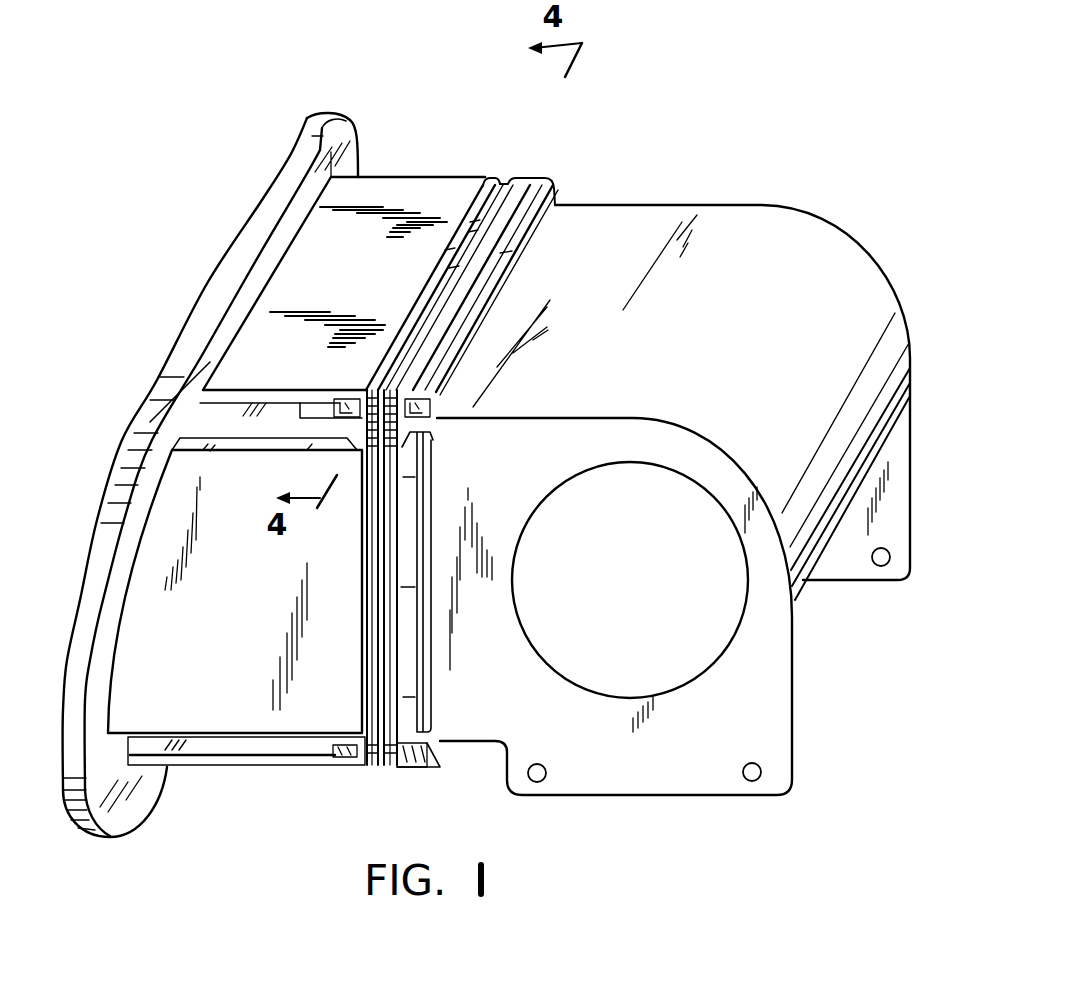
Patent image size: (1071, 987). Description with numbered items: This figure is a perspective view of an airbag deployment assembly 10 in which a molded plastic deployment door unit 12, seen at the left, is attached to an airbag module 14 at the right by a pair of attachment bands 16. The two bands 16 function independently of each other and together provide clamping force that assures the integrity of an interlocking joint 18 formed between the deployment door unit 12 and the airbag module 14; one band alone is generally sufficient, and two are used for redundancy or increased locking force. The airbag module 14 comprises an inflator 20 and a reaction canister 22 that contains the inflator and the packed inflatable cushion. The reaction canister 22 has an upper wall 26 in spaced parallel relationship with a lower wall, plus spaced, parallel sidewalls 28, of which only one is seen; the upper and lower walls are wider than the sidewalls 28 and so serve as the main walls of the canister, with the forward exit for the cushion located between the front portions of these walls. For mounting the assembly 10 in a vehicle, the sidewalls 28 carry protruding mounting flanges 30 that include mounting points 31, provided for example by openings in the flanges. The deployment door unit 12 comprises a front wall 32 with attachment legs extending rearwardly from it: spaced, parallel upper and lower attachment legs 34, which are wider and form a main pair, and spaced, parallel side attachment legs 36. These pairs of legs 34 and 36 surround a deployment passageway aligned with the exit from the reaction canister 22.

The airbag deployment assembly 10 is at (693, 120).
The molded plastic deployment door unit 12 is at (218, 268).
The airbag module 14 is at (796, 203).
The attachment bands 16 is at (530, 178).
The interlocking joint 18 is at (475, 227).
The inflator 20 is at (641, 565).
The reaction canister 22 is at (806, 503).
The upper wall 26 is at (590, 223).
The sidewalls 28 is at (465, 723).
The mounting flanges 30 is at (860, 572).
The mounting points 31 is at (881, 566).
The front wall 32 is at (190, 412).
The upper and lower attachment legs 34 is at (303, 245).
The side attachment legs 36 is at (327, 408).